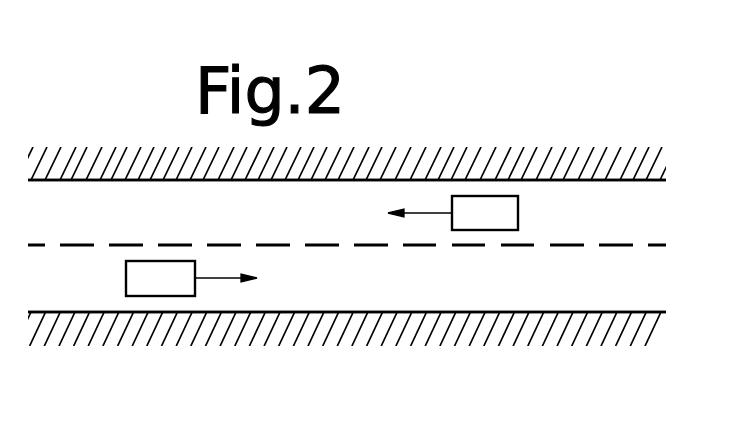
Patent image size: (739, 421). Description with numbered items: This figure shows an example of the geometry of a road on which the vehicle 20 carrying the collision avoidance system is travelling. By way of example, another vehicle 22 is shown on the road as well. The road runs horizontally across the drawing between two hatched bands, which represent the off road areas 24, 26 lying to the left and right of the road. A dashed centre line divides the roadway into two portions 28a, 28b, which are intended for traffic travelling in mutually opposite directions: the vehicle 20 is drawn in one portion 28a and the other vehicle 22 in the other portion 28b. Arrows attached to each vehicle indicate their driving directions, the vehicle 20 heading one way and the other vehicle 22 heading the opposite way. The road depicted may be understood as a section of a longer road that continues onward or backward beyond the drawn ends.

The vehicle 20 is at (163, 296).
The another vehicle 22 is at (488, 196).
The off road area 24 is at (518, 330).
The off road area 26 is at (145, 165).
The portion of the road 28a is at (46, 295).
The portion of the road 28b is at (617, 197).